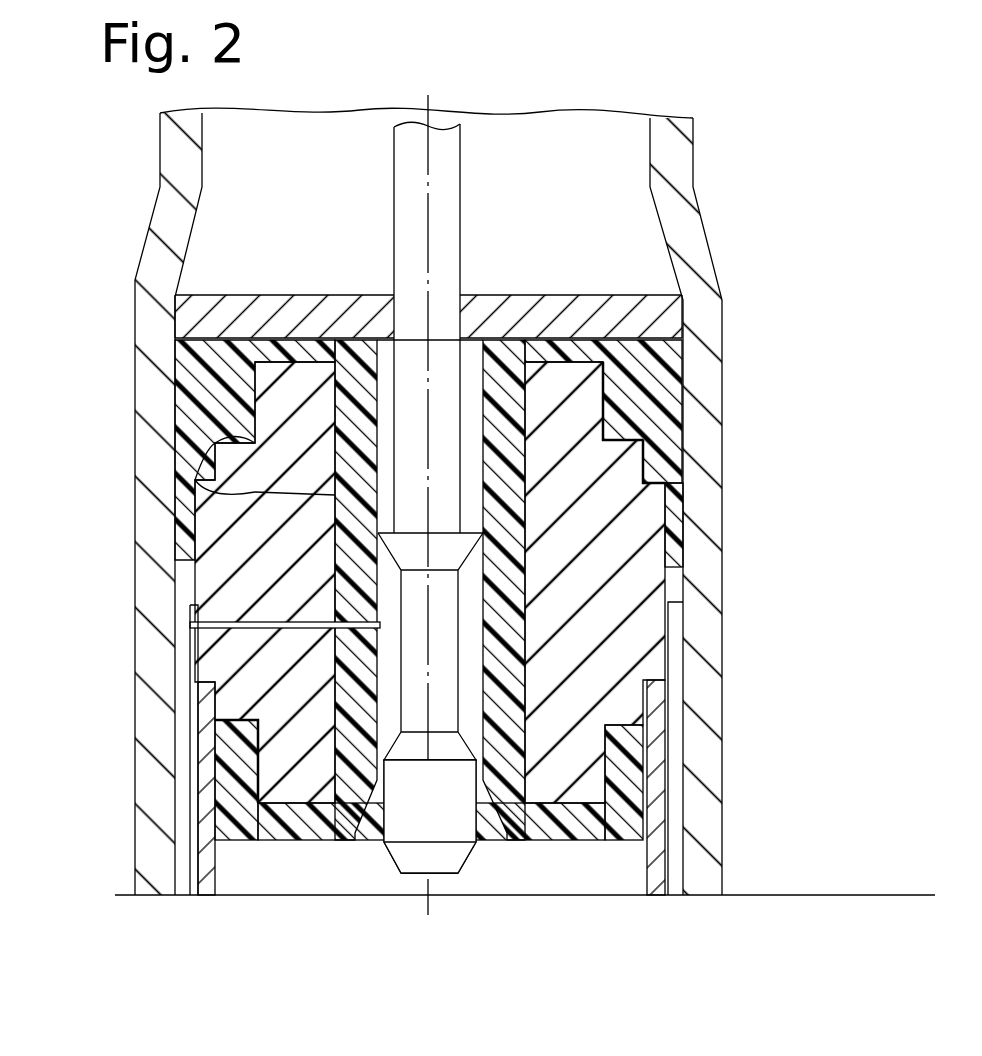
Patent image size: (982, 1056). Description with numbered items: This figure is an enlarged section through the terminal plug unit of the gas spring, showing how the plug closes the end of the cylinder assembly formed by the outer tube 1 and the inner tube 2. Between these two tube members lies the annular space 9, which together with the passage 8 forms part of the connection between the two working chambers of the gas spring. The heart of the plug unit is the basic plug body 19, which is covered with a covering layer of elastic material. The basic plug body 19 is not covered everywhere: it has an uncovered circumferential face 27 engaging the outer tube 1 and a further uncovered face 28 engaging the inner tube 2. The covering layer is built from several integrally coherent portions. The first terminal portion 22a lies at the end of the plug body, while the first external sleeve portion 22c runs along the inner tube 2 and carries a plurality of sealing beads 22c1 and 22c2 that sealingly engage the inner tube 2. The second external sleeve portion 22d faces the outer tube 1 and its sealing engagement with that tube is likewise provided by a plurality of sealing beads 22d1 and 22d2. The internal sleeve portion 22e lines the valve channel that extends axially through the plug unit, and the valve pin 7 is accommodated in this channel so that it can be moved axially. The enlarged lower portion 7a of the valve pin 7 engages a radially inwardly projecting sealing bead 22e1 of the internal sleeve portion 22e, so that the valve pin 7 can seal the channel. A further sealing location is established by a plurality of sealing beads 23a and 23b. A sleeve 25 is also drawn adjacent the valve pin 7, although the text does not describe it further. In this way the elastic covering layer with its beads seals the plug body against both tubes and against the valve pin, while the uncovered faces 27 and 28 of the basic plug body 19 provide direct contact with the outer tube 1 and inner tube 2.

The outer tube 1 is at (712, 870).
The inner tube 2 is at (662, 813).
The valve pin 7 is at (412, 792).
The enlarged lower portion of the valve pin 7a is at (415, 858).
The passage 8 is at (225, 622).
The annular space 9 is at (187, 727).
The basic plug body 19 is at (608, 572).
The first terminal portion 22a is at (598, 823).
The first external sleeve portion 22c is at (248, 790).
The sealing bead 22c1 is at (232, 823).
The sealing bead 22c2 is at (230, 783).
The second external sleeve portion 22d is at (684, 346).
The sealing bead 22d1 is at (637, 372).
The sealing bead 22d2 is at (683, 413).
The internal sleeve portion 22e is at (353, 332).
The radially inwardly projecting sealing bead 22e1 is at (365, 820).
The sealing bead 23a is at (372, 492).
The sealing bead 23b is at (365, 462).
The sleeve 25 is at (482, 627).
The uncovered circumferential face 27 is at (683, 567).
The uncovered face 28 is at (648, 682).